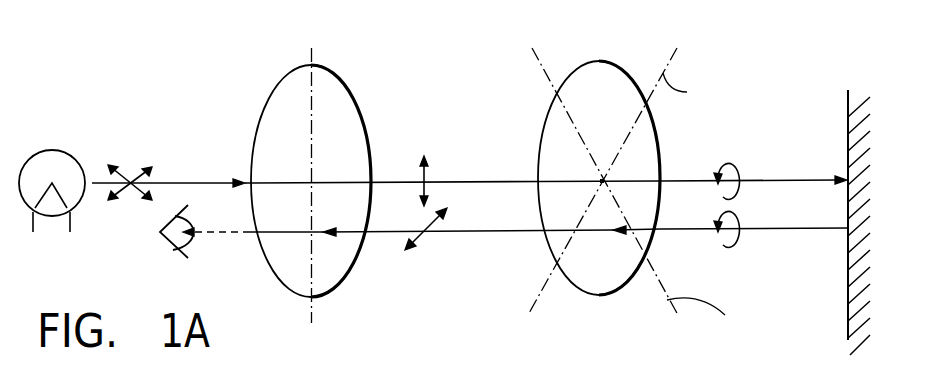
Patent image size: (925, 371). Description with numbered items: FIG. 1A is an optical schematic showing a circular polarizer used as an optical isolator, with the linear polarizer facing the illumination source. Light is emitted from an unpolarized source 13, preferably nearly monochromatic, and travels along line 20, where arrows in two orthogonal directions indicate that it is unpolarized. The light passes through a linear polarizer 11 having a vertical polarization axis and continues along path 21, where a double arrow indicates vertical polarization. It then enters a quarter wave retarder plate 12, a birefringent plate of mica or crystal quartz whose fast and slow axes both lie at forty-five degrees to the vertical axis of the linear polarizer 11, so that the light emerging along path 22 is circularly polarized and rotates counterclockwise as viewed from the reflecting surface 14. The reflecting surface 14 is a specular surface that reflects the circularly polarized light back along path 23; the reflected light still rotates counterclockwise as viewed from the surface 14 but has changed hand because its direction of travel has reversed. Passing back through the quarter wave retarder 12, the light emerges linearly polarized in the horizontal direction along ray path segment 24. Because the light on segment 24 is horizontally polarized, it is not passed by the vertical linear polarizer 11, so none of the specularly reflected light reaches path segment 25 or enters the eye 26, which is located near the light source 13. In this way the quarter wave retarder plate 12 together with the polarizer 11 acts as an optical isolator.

The linear polarizer 11 is at (323, 82).
The quarter wave retarder plate 12 is at (622, 82).
The unpolarized source 13 is at (48, 150).
The reflecting surface 14 is at (847, 125).
The path of unpolarized light 20 is at (220, 178).
The path of vertically polarized light 21 is at (510, 177).
The path of circularly polarized light 22 is at (803, 175).
The reflected light path 23 is at (822, 230).
The ray path segment of horizontally polarized light 24 is at (510, 233).
The path segment to the eye 25 is at (210, 234).
The eye 26 is at (180, 250).